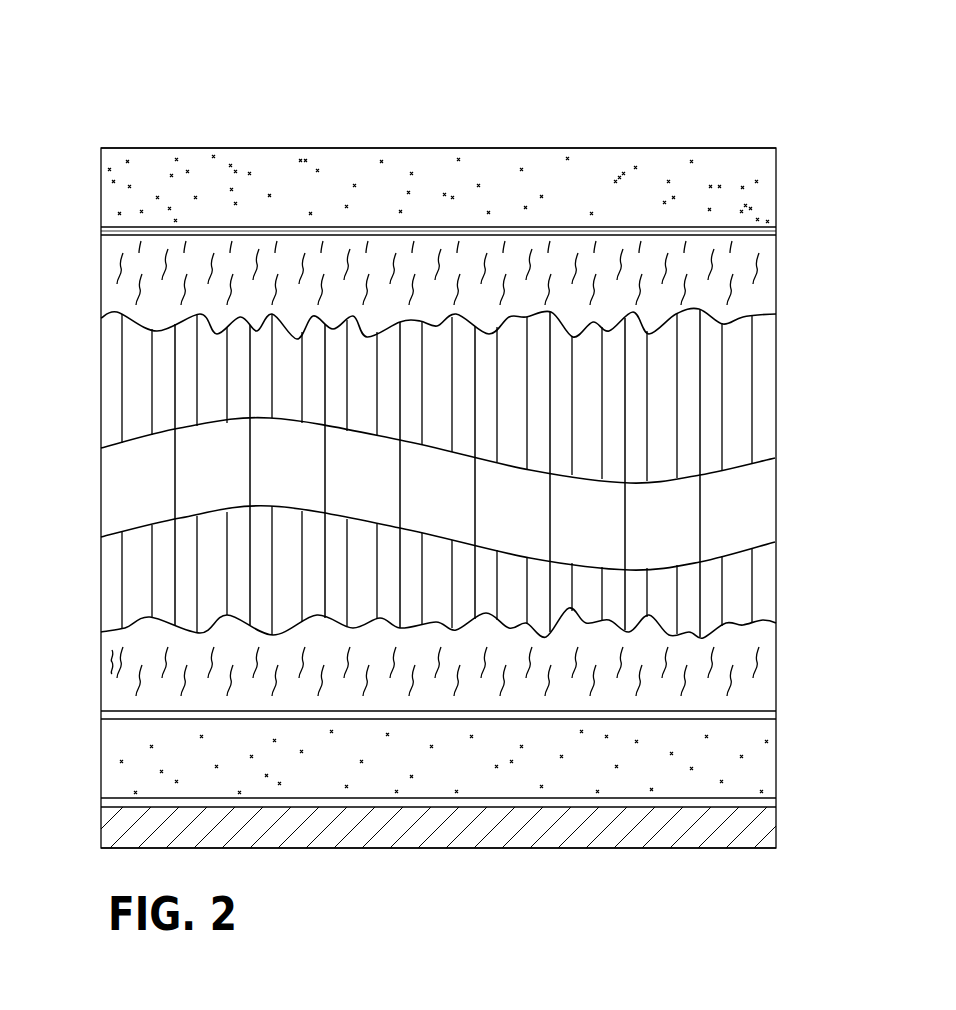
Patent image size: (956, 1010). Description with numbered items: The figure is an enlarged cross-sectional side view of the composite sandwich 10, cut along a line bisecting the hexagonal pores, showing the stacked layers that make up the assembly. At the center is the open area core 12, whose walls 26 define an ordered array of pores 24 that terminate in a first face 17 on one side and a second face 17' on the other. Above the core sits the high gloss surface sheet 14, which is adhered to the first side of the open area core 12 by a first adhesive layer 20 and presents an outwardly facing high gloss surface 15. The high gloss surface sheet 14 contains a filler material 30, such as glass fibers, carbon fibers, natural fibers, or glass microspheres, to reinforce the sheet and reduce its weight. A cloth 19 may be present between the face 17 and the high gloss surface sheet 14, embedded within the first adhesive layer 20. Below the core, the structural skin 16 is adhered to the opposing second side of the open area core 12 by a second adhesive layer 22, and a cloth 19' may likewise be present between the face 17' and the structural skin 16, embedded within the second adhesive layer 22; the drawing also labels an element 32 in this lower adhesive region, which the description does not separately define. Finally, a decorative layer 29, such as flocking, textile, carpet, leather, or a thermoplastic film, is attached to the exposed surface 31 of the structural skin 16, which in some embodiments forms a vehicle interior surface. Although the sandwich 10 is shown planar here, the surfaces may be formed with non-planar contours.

The composite sandwich 10 is at (645, 100).
The open area core 12 is at (777, 388).
The high gloss surface sheet 14 is at (777, 190).
The high gloss surface 15 is at (731, 148).
The structural skin 16 is at (777, 764).
The face 17 is at (403, 234).
The face 17' is at (400, 733).
The cloth 19 is at (403, 260).
The cloth 19' is at (400, 702).
The first adhesive layer 20 is at (777, 276).
The second adhesive layer 22 is at (777, 672).
The pores 24 is at (203, 366).
The walls 26 is at (250, 567).
The decorative layer 29 is at (103, 822).
The filler material 30 is at (118, 190).
The exposed surface 31 is at (777, 806).
The fibers of second fibrous layer 32 is at (110, 648).